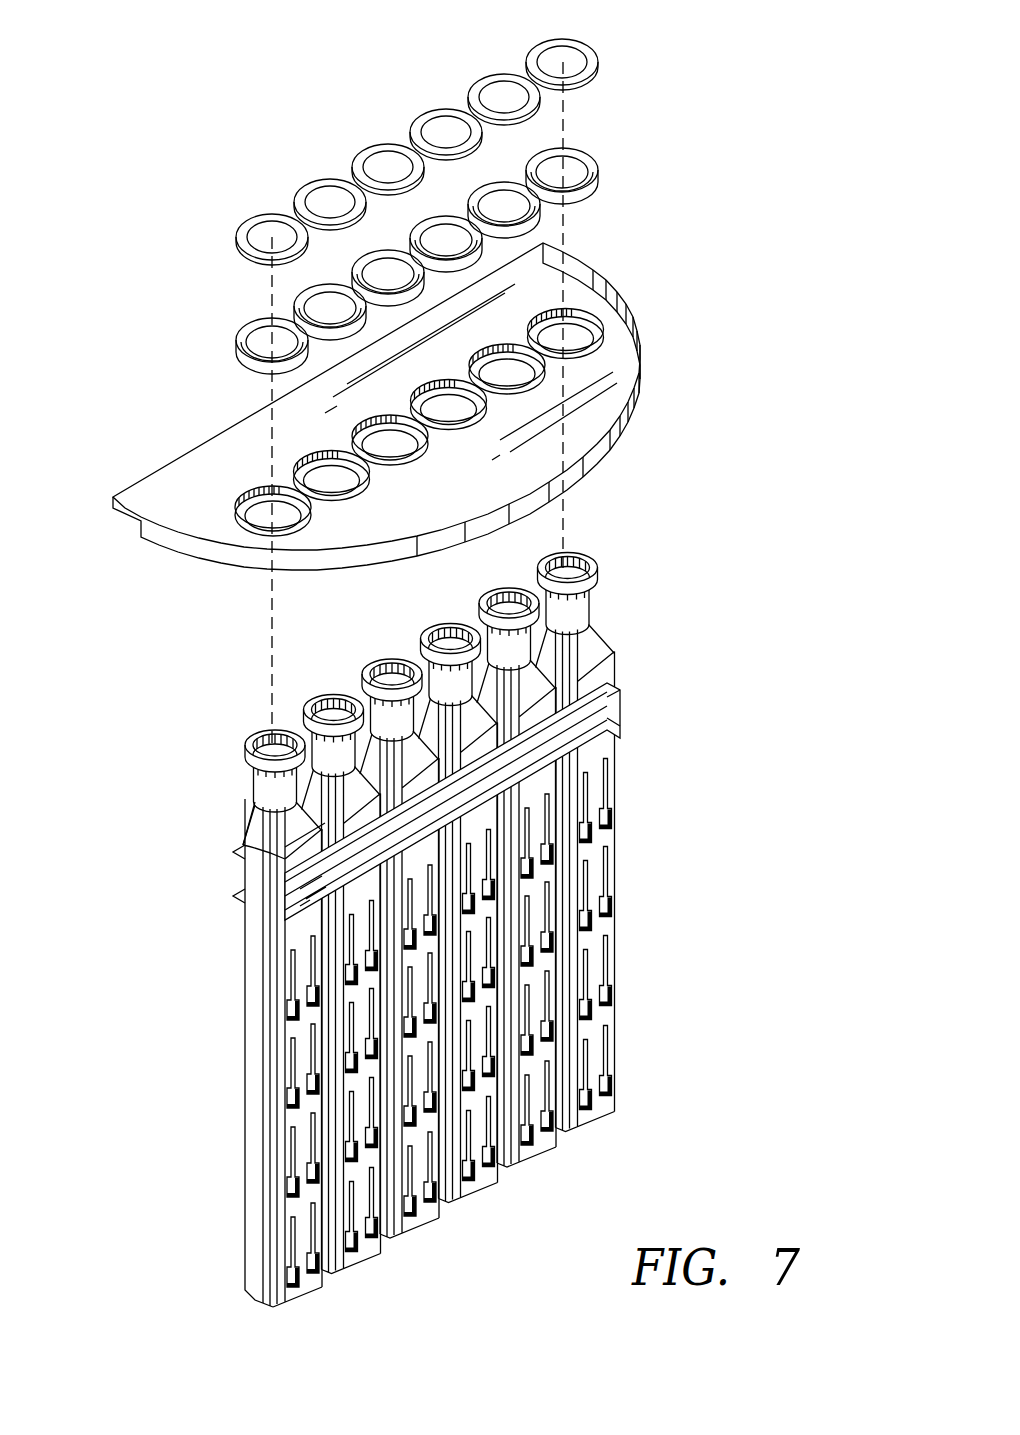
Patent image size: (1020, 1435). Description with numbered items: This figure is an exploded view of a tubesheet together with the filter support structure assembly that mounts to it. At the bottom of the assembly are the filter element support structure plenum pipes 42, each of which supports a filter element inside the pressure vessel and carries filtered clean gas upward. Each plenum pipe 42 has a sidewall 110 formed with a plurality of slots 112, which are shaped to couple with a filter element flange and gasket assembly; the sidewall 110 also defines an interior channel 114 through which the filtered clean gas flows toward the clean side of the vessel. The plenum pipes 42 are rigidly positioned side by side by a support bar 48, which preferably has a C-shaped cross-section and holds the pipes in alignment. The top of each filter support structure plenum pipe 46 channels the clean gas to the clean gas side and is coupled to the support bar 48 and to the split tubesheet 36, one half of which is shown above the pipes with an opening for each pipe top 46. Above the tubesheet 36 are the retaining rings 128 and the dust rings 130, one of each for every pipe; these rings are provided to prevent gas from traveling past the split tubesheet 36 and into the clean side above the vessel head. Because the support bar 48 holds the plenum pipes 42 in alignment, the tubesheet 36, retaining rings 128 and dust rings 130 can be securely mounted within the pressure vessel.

The split tubesheet 36 is at (178, 498).
The filter element support structure plenum pipe 42 is at (590, 785).
The top of filter support structure plenum pipe 46 is at (253, 783).
The support bar 48 is at (597, 717).
The sidewall 110 is at (248, 970).
The slot 112 is at (288, 998).
The interior channel 114 is at (267, 728).
The retaining ring 128 is at (242, 337).
The dust ring 130 is at (240, 230).